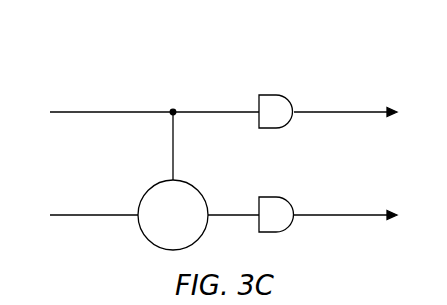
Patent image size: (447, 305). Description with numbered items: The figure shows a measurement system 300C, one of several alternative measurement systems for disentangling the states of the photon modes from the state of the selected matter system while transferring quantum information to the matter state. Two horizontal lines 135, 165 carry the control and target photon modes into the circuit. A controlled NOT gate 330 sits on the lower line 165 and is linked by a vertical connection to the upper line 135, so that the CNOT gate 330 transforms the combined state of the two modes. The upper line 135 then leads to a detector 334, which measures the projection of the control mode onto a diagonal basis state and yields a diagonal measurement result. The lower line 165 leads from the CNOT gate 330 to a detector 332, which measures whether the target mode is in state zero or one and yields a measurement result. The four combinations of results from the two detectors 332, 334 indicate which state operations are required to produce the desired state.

The measurement system 300C is at (121, 42).
The first qubit line 135 is at (87, 112).
The second qubit line 165 is at (87, 215).
The controlled NOT gate 330 is at (155, 182).
The detector 334 is at (267, 95).
The detector 332 is at (267, 197).